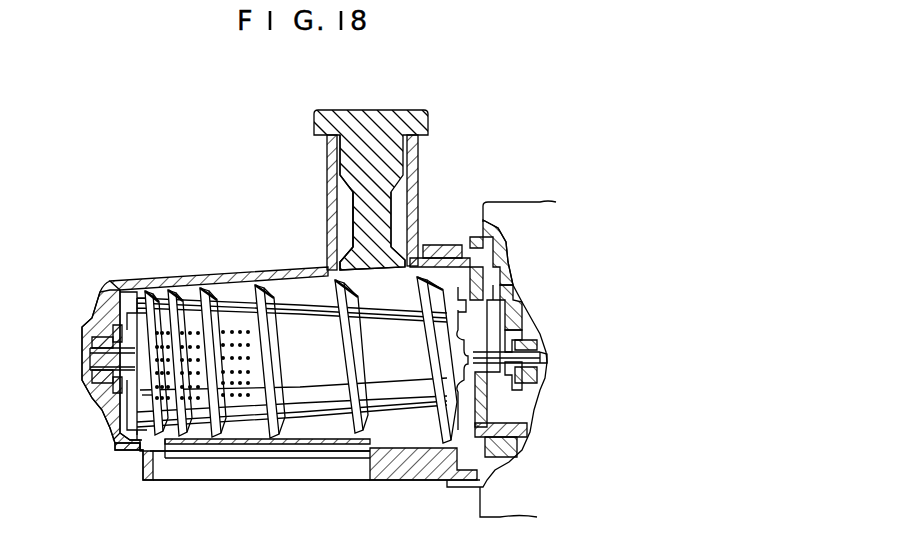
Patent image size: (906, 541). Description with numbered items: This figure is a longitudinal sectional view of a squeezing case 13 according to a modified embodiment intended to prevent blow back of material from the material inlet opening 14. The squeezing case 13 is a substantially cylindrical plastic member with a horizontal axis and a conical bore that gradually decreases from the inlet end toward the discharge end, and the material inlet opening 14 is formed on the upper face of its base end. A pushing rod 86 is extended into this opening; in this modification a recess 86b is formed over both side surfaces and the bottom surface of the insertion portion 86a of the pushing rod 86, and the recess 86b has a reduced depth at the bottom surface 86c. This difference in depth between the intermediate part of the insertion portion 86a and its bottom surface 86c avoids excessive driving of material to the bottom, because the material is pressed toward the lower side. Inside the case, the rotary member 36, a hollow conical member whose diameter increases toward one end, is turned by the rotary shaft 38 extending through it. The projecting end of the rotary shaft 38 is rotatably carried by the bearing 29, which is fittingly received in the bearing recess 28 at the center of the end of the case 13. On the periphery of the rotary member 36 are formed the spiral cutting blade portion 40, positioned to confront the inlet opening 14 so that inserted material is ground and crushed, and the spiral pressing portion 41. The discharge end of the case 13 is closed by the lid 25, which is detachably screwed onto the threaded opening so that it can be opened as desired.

The pushing rod 86 is at (400, 109).
The insertion portion 86a is at (348, 163).
The recess 86b is at (355, 211).
The bottom surface 86c is at (382, 268).
The material inlet opening 14 is at (412, 177).
The squeezing case 13 is at (208, 280).
The bearing 29 is at (93, 344).
The bearing recess 28 is at (92, 367).
The rotary shaft 38 is at (102, 393).
The spiral pressing portion 41 is at (242, 420).
The rotary member 36 is at (320, 410).
The spiral cutting blade portion 40 is at (444, 428).
The lid 25 is at (452, 471).